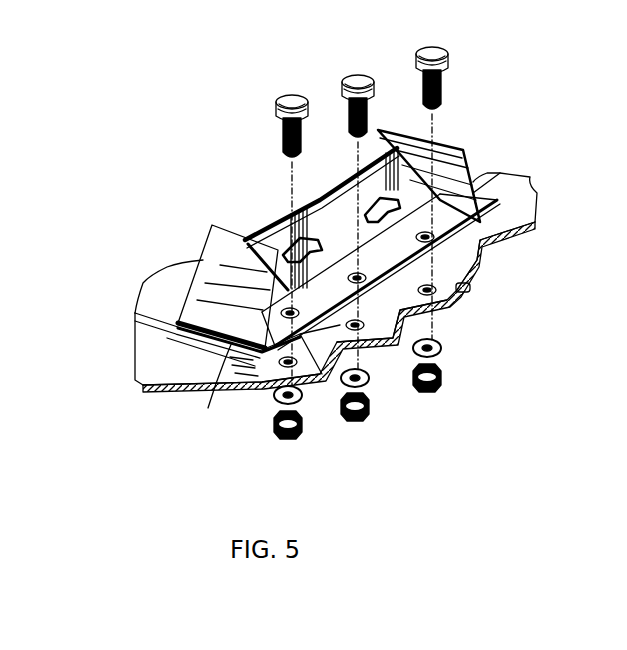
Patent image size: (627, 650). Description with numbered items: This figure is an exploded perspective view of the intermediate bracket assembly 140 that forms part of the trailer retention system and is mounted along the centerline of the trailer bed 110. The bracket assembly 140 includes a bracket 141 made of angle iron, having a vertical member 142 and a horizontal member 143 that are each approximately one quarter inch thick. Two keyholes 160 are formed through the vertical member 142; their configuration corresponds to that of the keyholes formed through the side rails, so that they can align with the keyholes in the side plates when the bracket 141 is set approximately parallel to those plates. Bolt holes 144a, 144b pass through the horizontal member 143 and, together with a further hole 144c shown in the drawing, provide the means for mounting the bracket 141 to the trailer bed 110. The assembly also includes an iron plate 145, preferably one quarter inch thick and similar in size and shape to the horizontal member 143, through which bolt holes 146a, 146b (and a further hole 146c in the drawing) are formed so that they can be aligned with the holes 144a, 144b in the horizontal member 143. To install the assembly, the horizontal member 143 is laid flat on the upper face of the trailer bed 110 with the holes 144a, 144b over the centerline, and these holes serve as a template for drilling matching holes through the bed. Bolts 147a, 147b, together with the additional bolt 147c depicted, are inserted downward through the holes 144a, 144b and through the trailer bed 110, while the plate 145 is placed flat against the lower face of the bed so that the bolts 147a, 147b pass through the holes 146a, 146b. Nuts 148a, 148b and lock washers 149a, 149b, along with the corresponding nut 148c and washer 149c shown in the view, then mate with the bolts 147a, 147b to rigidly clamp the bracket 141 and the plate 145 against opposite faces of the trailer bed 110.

The trailer bed 110 is at (142, 390).
The intermediate bracket assembly 140 is at (163, 294).
The bracket 141 is at (200, 250).
The vertical member 142 is at (283, 217).
The horizontal member 143 is at (468, 160).
The bolt hole 144a is at (210, 387).
The bolt hole 144b is at (432, 314).
The mounting plate 144c is at (490, 260).
The iron plate 145 is at (525, 237).
The bolt hole 146a is at (262, 400).
The bolt hole 146b is at (368, 327).
The mounting hole 146c is at (445, 290).
The bolt 147a is at (280, 100).
The bolt 147b is at (348, 77).
The screw 147c is at (425, 47).
The nut 148a is at (300, 432).
The nut 148b is at (372, 418).
The nut 148c is at (443, 385).
The lock washer 149a is at (300, 402).
The lock washer 149b is at (372, 387).
The washer 149c is at (442, 358).
The keyhole 160 is at (400, 203).